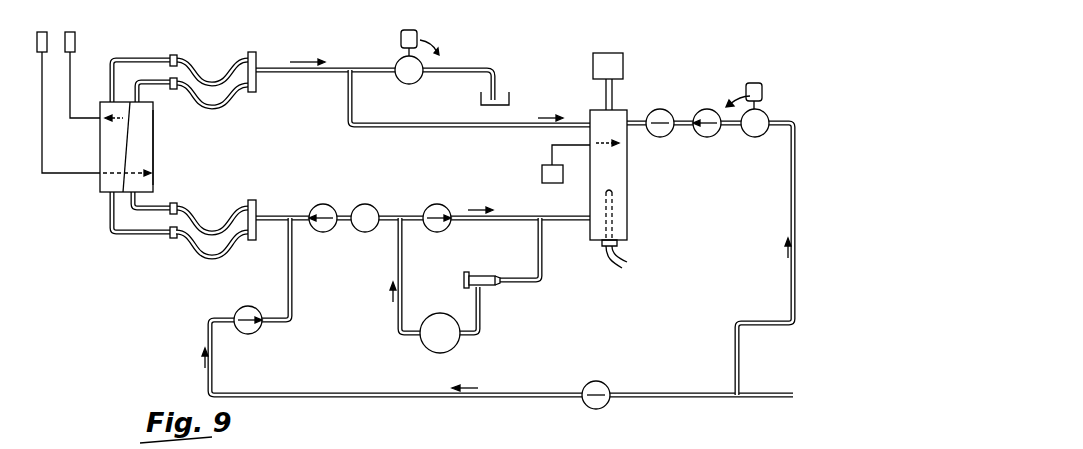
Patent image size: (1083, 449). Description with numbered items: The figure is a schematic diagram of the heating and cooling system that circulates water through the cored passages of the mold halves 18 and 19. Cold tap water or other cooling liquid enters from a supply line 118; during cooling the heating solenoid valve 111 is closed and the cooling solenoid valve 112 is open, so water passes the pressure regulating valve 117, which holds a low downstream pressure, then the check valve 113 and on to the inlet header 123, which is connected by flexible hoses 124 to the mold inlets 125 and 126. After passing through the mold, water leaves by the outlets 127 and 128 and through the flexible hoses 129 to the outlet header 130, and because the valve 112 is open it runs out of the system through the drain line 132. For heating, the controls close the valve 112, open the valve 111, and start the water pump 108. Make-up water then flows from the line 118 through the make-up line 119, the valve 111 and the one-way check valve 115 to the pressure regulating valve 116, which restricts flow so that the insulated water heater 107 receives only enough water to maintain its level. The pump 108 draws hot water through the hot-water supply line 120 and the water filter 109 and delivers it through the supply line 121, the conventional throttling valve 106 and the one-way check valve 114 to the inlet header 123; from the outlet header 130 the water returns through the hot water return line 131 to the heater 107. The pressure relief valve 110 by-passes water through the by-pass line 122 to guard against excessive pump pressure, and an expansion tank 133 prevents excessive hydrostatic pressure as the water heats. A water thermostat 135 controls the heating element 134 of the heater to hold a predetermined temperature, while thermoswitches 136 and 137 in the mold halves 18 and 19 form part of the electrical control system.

The mold half 18 is at (100, 145).
The mold half 19 is at (153, 150).
The throttling valve 106 is at (375, 205).
The water heater 107 is at (627, 183).
The water pump 108 is at (458, 345).
The water filter 109 is at (485, 273).
The pressure relief valve 110 is at (447, 205).
The heating solenoid valve 111 is at (750, 137).
The cooling solenoid valve 112 is at (396, 60).
The check valve 113 is at (258, 330).
The check valve 114 is at (329, 205).
The check valve 115 is at (706, 109).
The pressure regulating valve 116 is at (659, 109).
The pressure regulating valve 117 is at (604, 383).
The supply line 118 is at (291, 280).
The make-up line 119 is at (790, 302).
The hot-water supply line 120 is at (545, 258).
The supply line 121 is at (277, 216).
The by-pass line 122 is at (503, 216).
The inlet header 123 is at (255, 200).
The flexible hoses 124 is at (199, 250).
The mold inlet 125 is at (110, 228).
The mold inlet 126 is at (157, 206).
The mold outlet 127 is at (135, 60).
The mold outlet 128 is at (157, 87).
The flexible hoses 129 is at (232, 92).
The outlet header 130 is at (258, 68).
The hot water return line 131 is at (402, 124).
The drain line 132 is at (460, 70).
The expansion tank 133 is at (624, 66).
The heating element 134 is at (615, 218).
The water thermostat 135 is at (542, 172).
The thermoswitch 136 is at (70, 32).
The thermoswitch 137 is at (42, 32).